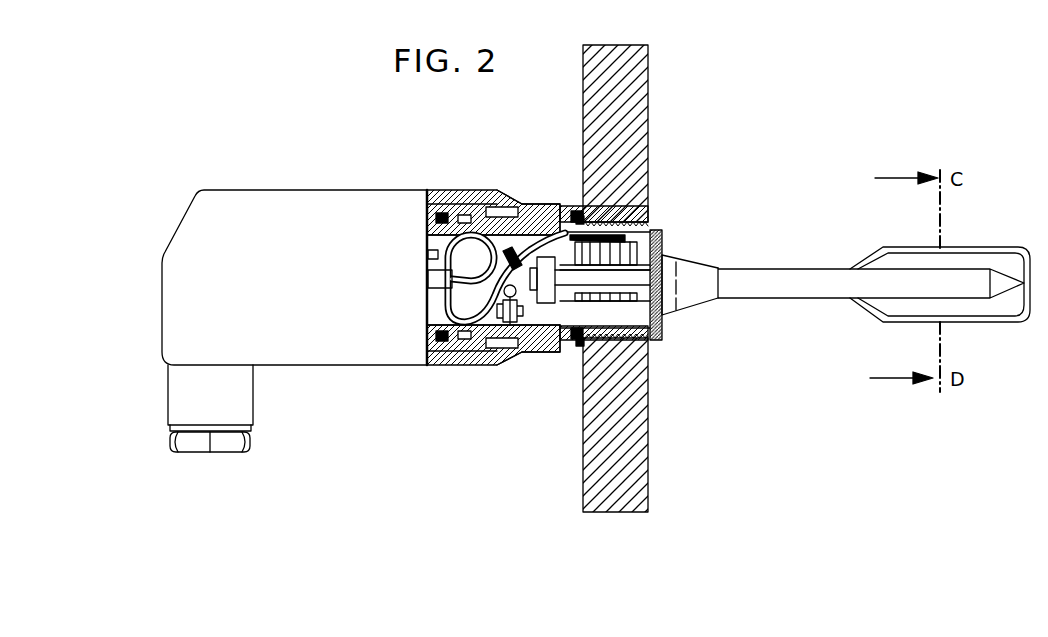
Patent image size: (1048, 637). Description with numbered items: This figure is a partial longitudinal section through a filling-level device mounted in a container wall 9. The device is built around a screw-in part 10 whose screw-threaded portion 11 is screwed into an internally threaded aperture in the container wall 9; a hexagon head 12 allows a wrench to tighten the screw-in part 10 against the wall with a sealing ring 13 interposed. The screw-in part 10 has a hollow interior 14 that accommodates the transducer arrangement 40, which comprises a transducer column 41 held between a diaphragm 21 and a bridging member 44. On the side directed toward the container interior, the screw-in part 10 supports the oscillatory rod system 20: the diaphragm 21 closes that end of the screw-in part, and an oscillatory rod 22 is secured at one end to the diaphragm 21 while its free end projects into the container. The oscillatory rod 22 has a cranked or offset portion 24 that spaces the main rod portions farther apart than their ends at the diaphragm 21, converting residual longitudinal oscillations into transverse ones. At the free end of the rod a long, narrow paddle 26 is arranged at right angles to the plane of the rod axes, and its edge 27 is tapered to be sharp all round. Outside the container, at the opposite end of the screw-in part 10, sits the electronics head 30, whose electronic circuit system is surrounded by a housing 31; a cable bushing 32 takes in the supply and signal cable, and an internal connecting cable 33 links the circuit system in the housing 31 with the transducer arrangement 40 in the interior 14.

The container wall 9 is at (634, 447).
The screw-in part 10 is at (531, 180).
The screw-threaded portion 11 is at (640, 212).
The hexagon head 12 is at (546, 197).
The sealing ring 13 is at (580, 347).
The interior 14 is at (656, 340).
The oscillatory rod system 20 is at (846, 268).
The diaphragm 21 is at (675, 308).
The oscillatory rod 22 is at (780, 296).
The offset portion 24 is at (705, 294).
The paddle 26 is at (978, 252).
The edge 27 is at (985, 324).
The electronics head 30 is at (320, 176).
The housing 31 is at (340, 348).
The cable bushing 32 is at (238, 446).
The internal connecting cable 33 is at (521, 196).
The transducer arrangement 40 is at (645, 238).
The transducer column 41 is at (655, 256).
The bridging member 44 is at (541, 335).